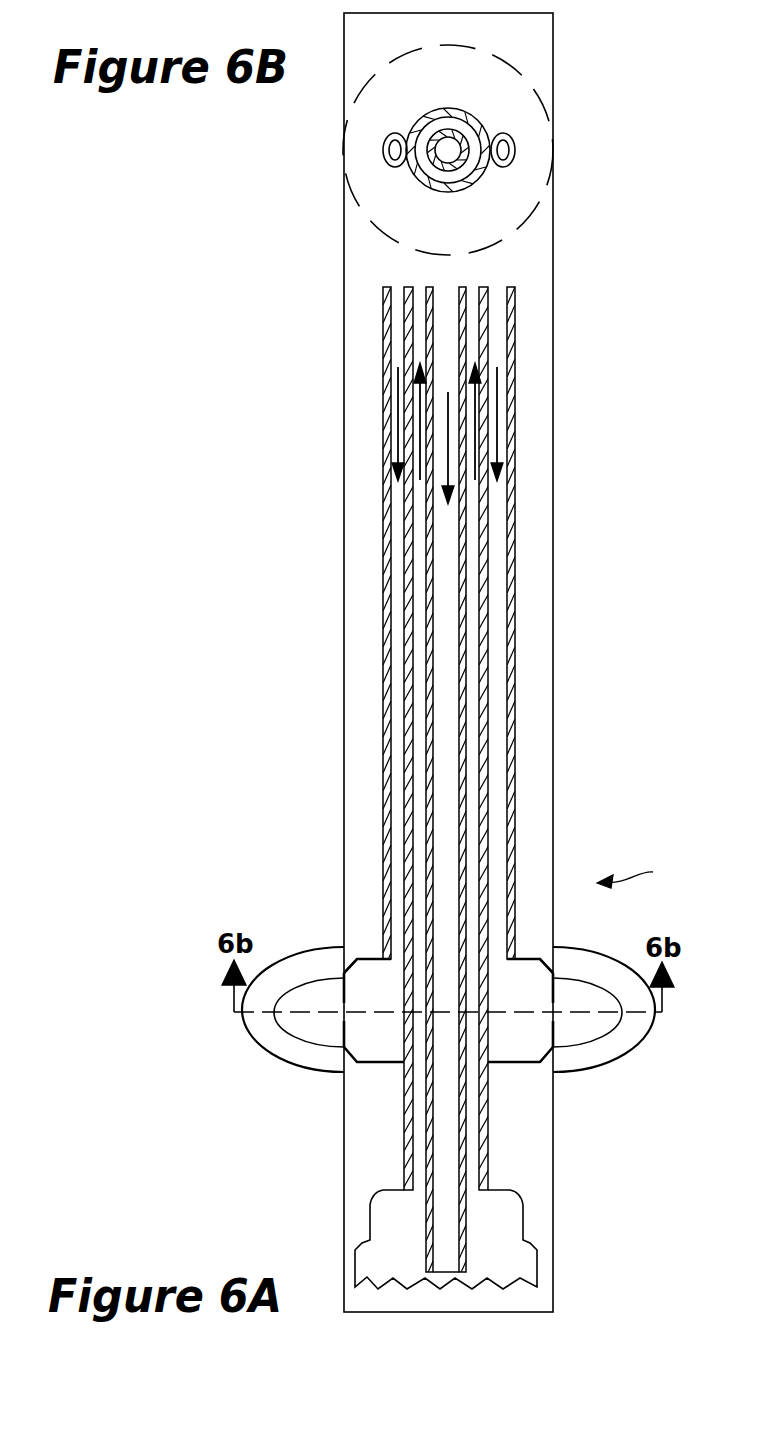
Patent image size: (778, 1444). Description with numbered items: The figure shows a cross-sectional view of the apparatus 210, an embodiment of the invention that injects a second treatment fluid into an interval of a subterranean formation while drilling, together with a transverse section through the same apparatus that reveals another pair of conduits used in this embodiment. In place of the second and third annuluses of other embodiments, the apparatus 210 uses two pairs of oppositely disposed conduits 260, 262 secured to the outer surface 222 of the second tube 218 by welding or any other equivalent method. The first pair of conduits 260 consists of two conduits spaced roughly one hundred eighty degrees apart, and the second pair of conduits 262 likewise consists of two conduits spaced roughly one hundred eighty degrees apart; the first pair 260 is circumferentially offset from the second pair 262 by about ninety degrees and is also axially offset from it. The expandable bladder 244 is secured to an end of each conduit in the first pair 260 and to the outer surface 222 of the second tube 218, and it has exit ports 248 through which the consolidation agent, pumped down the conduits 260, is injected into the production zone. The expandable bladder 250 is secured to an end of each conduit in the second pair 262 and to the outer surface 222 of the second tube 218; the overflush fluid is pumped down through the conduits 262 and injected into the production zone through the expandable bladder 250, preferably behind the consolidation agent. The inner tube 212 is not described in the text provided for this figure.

In FIG. 6A, the apparatus embodiment 210 is at (654, 872).
In FIG. 6B, the inner tube 212 is at (463, 140).
In FIG. 6A, the inner tube 212 is at (468, 676).
In FIG. 6B, the second tube 218 is at (458, 188).
In FIG. 6A, the second tube 218 is at (487, 758).
In FIG. 6A, the outer surface 222 is at (491, 616).
In FIG. 6B, the expandable bladder 244 is at (493, 53).
In FIG. 6B, the exit ports 248 is at (541, 191).
In FIG. 6A, the expandable bladder 250 is at (597, 950).
In FIG. 6B, the first pair of oppositely disposed conduits 260 is at (383, 150).
In FIG. 6A, the second pair of conduits 262 is at (513, 830).